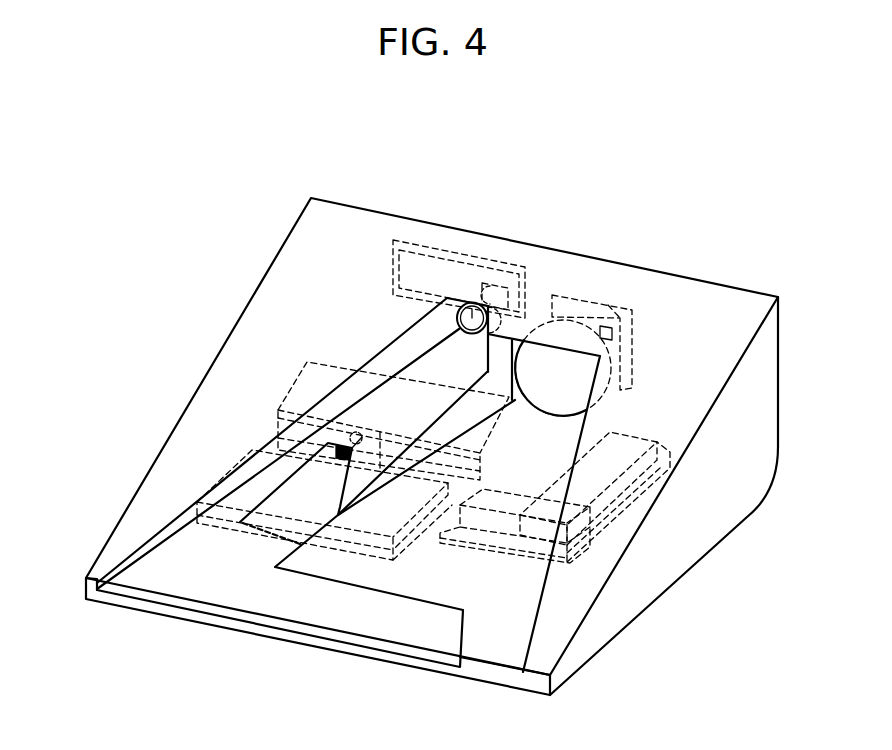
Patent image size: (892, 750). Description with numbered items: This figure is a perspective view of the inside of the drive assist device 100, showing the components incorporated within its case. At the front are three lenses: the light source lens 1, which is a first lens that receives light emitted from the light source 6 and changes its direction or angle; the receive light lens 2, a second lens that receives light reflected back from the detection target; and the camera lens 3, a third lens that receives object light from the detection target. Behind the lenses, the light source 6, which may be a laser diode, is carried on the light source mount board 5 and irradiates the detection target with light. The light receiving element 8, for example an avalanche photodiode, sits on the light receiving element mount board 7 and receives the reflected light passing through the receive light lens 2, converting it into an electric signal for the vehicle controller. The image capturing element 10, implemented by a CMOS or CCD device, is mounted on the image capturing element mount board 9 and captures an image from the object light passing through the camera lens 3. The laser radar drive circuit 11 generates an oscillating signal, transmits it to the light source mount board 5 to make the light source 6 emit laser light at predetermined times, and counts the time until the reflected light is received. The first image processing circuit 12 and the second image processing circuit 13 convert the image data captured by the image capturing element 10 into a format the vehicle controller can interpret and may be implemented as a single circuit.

The drive assist device 100 is at (343, 161).
The light source lens 1 is at (333, 462).
The receive light lens 2 is at (558, 367).
The camera lens 3 is at (472, 315).
The light source mount board 5 is at (273, 423).
The light source 6 is at (320, 402).
The light receiving element mount board 7 is at (605, 338).
The light receiving element 8 is at (620, 320).
The image capturing element mount board 9 is at (432, 265).
The image capturing element 10 is at (505, 285).
The laser radar drive circuit 11 is at (600, 507).
The first image processing circuit 12 is at (348, 390).
The second image processing circuit 13 is at (220, 520).